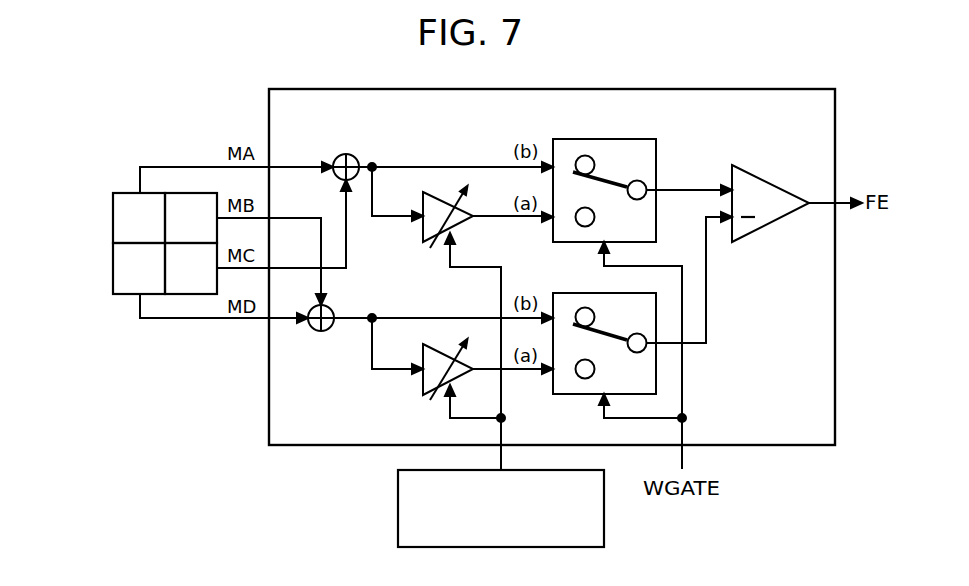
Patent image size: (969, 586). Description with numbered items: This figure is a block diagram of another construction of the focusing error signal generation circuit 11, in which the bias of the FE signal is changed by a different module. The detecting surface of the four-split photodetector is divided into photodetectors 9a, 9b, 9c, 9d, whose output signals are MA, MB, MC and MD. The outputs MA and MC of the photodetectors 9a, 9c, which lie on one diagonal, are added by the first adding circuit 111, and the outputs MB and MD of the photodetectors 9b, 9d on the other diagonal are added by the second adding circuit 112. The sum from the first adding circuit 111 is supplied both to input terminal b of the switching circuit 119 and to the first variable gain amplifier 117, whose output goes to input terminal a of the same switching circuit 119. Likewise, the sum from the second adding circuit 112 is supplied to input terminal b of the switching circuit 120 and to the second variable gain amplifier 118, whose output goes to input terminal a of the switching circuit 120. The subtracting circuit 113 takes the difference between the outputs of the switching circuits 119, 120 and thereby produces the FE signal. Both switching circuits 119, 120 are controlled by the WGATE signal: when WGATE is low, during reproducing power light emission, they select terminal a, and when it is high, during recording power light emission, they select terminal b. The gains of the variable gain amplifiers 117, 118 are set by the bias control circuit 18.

The focusing error signal generation circuit 11 is at (733, 89).
The photodetector 9a is at (113, 218).
The photodetector 9b is at (194, 192).
The photodetector 9c is at (194, 295).
The photodetector 9d is at (113, 268).
The first adding circuit 111 is at (350, 152).
The second adding circuit 112 is at (319, 333).
The subtracting circuit 113 is at (757, 172).
The first variable gain amplifier 117 is at (424, 228).
The second variable gain amplifier 118 is at (424, 385).
The switching circuit 119 is at (635, 139).
The switching circuit 120 is at (579, 394).
The bias control circuit 18 is at (398, 508).